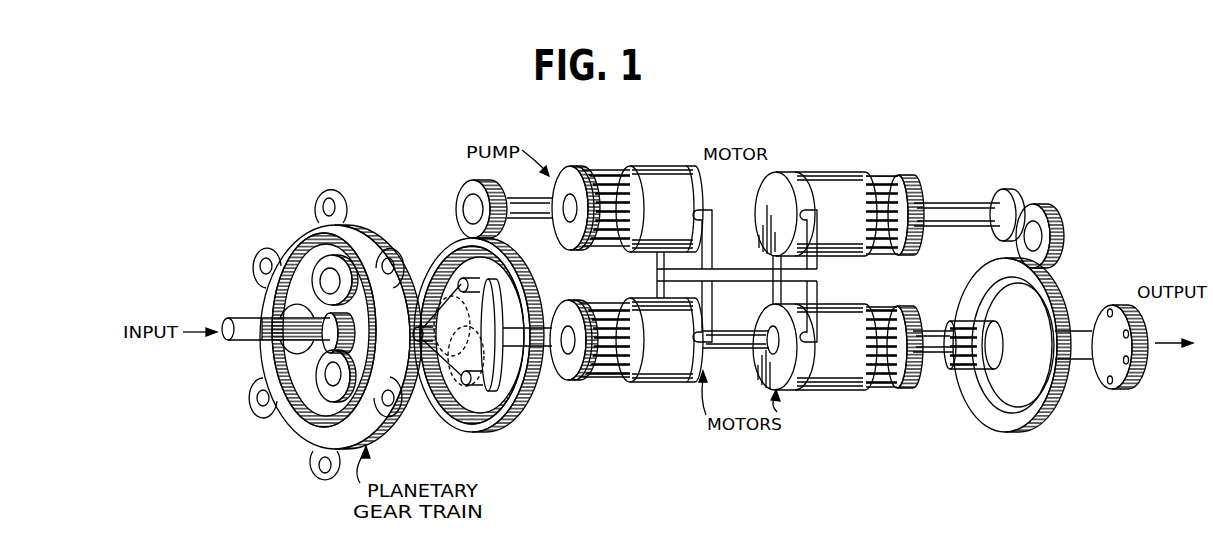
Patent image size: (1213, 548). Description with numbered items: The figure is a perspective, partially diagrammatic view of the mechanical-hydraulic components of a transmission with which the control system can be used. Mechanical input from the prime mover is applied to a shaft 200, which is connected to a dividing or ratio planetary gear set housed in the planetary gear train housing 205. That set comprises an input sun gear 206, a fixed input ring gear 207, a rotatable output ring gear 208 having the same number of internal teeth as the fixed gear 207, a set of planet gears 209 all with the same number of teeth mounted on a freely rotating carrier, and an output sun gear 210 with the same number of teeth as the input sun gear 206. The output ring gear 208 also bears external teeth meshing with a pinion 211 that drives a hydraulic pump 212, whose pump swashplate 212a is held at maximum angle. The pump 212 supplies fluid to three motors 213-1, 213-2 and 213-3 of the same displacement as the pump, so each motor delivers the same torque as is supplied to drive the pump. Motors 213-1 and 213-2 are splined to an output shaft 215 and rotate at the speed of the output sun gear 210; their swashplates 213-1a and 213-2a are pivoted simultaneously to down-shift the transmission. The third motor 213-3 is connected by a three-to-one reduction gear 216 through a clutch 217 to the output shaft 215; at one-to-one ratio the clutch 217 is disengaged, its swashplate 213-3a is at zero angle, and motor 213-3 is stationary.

The shaft 200 is at (251, 320).
The planetary gear train housing 205 is at (301, 200).
The input sun gear 206 is at (272, 352).
The fixed input ring gear 207 is at (286, 268).
The rotatable output ring gear 208 is at (460, 428).
The planet gears 209 is at (338, 358).
The output sun gear 210 is at (515, 354).
The pinion 211 is at (458, 210).
The hydraulic pump 212 is at (665, 170).
The pump swashplate 212a is at (594, 168).
The first motor 213-1 is at (664, 367).
The first motor swashplate 213-1a is at (584, 380).
The second motor 213-2 is at (796, 377).
The second motor swashplate 213-2a is at (897, 380).
The third motor 213-3 is at (787, 166).
The third motor swashplate 213-3a is at (898, 178).
The output shaft 215 is at (933, 338).
The reduction gear 216 is at (1052, 212).
The clutch 217 is at (986, 398).